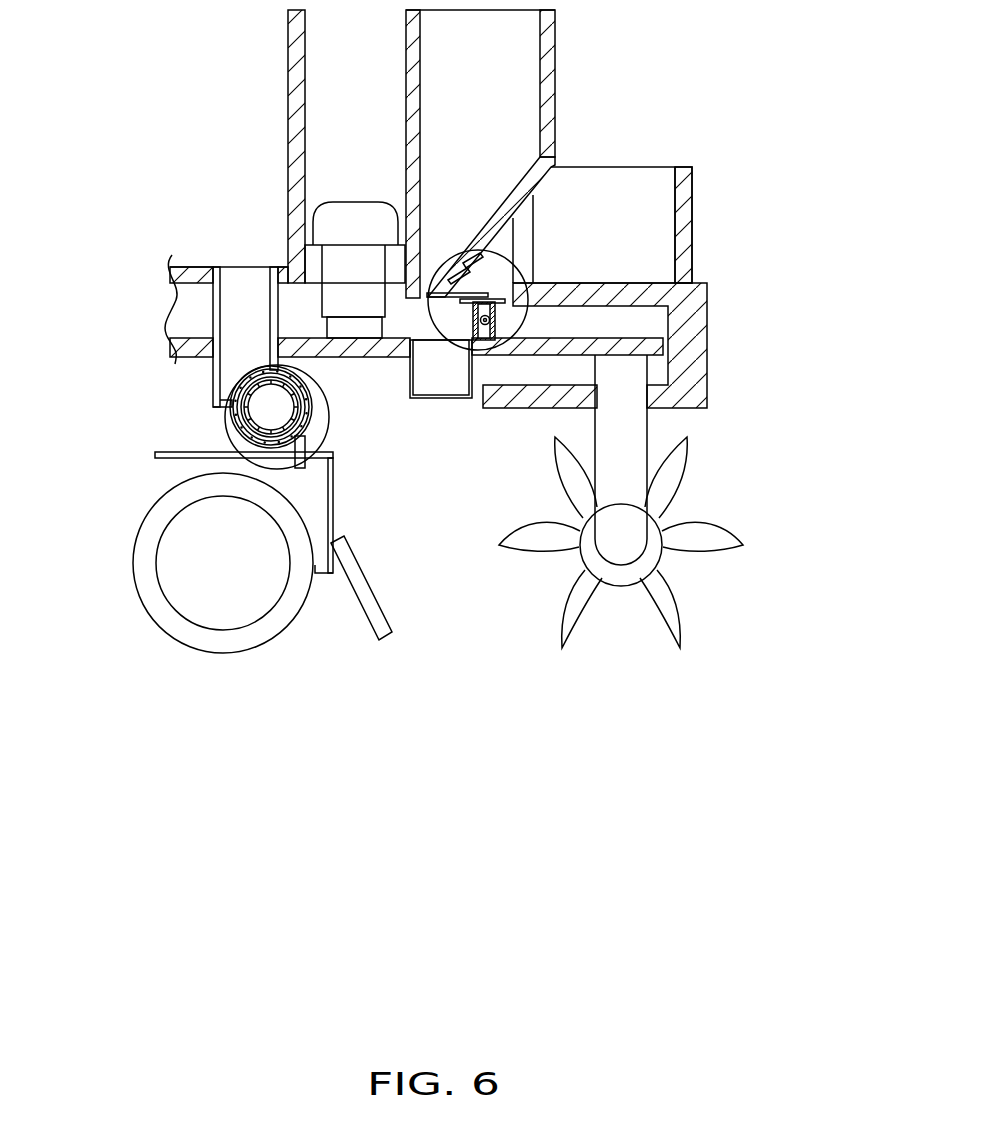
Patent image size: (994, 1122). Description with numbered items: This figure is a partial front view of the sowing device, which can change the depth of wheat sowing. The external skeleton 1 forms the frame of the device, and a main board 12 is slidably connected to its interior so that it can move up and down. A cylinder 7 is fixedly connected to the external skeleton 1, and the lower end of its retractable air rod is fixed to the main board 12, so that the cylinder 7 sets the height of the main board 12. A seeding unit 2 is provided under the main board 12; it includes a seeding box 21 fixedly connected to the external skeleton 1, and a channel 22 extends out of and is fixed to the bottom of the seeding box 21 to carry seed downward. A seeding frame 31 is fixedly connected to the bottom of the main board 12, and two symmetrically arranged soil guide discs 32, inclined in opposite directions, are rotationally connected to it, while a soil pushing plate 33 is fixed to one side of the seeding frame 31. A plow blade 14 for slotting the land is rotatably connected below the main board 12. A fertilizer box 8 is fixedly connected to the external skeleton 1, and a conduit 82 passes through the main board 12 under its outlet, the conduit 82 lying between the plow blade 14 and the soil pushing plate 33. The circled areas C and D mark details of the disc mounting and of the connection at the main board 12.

The external skeleton 1 is at (697, 340).
The seeding unit 2 is at (186, 358).
The cylinder 7 is at (356, 220).
The fertilizer box 8 is at (549, 97).
The main board 12 is at (619, 336).
The plow blade 14 is at (677, 543).
The seeding box 21 is at (302, 106).
The channel 22 is at (234, 302).
The seeding frame 31 is at (168, 452).
The soil guide disc 32 is at (135, 573).
The soil pushing plate 33 is at (368, 593).
The conduit 82 is at (447, 385).
The detail C gear C is at (332, 431).
The detail D connection D is at (526, 269).